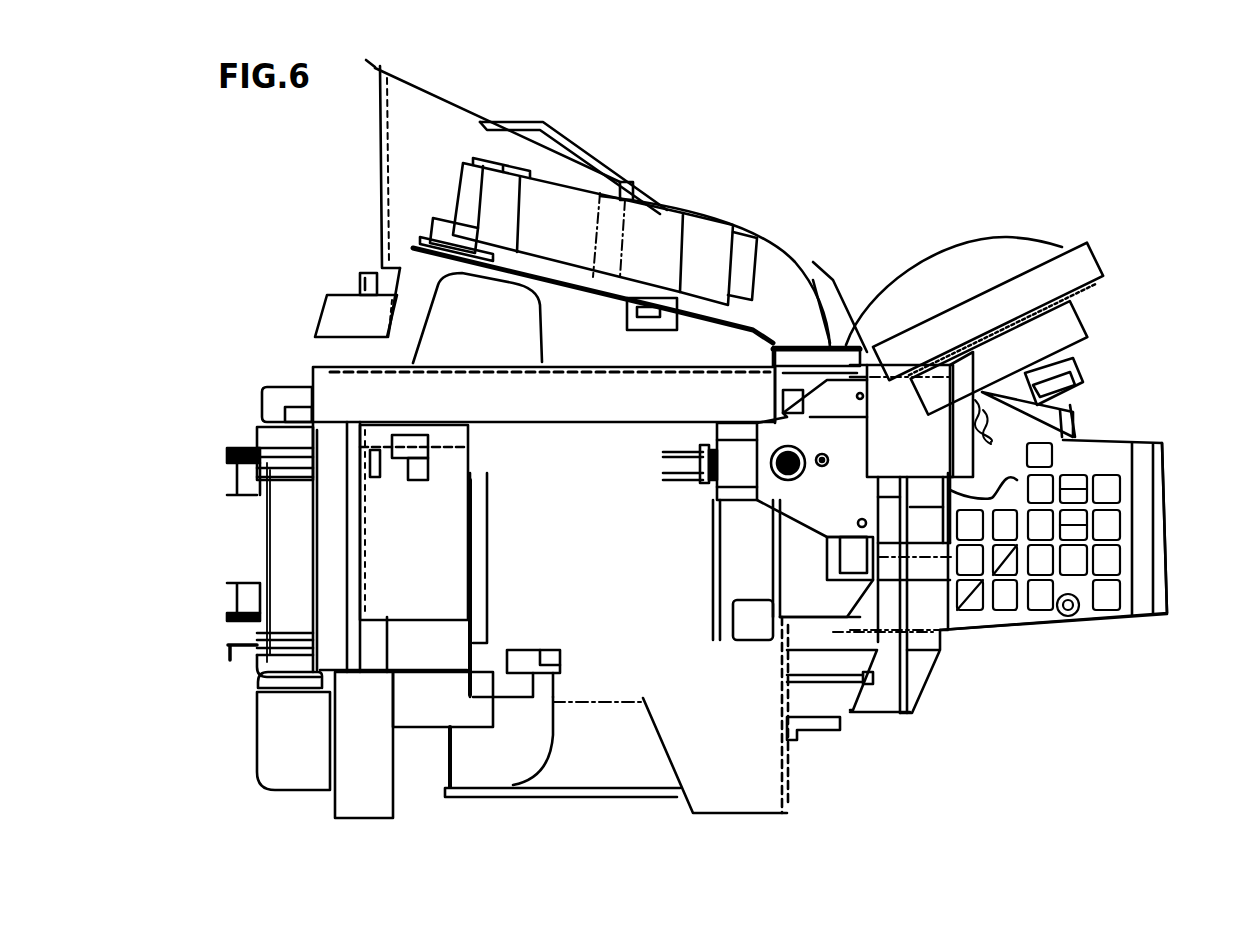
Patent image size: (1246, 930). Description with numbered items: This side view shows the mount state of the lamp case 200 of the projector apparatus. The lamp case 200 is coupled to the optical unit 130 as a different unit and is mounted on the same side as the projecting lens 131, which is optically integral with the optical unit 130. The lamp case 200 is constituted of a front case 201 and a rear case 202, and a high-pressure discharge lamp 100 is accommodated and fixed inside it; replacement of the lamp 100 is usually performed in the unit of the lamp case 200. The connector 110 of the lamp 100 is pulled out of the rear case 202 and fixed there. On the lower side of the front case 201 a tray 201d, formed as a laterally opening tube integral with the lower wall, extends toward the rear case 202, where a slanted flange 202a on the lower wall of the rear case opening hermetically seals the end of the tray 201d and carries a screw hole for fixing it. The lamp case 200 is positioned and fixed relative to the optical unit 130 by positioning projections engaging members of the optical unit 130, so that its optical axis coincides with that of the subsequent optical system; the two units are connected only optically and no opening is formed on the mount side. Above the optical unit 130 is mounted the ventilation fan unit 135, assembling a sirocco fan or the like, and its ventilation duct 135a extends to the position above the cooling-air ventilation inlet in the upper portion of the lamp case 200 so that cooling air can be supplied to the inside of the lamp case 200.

The high-pressure discharge lamp 100 is at (1037, 490).
The connector 110 is at (1058, 440).
The optical unit 130 is at (568, 802).
The projecting lens 131 is at (953, 263).
The ventilation fan unit 135 is at (577, 217).
The ventilation duct 135a is at (777, 243).
The lamp case 200 is at (1018, 738).
The front case 201 is at (841, 745).
The tray 201d is at (887, 697).
The rear case 202 is at (1057, 640).
The slanted flange 202a is at (932, 660).